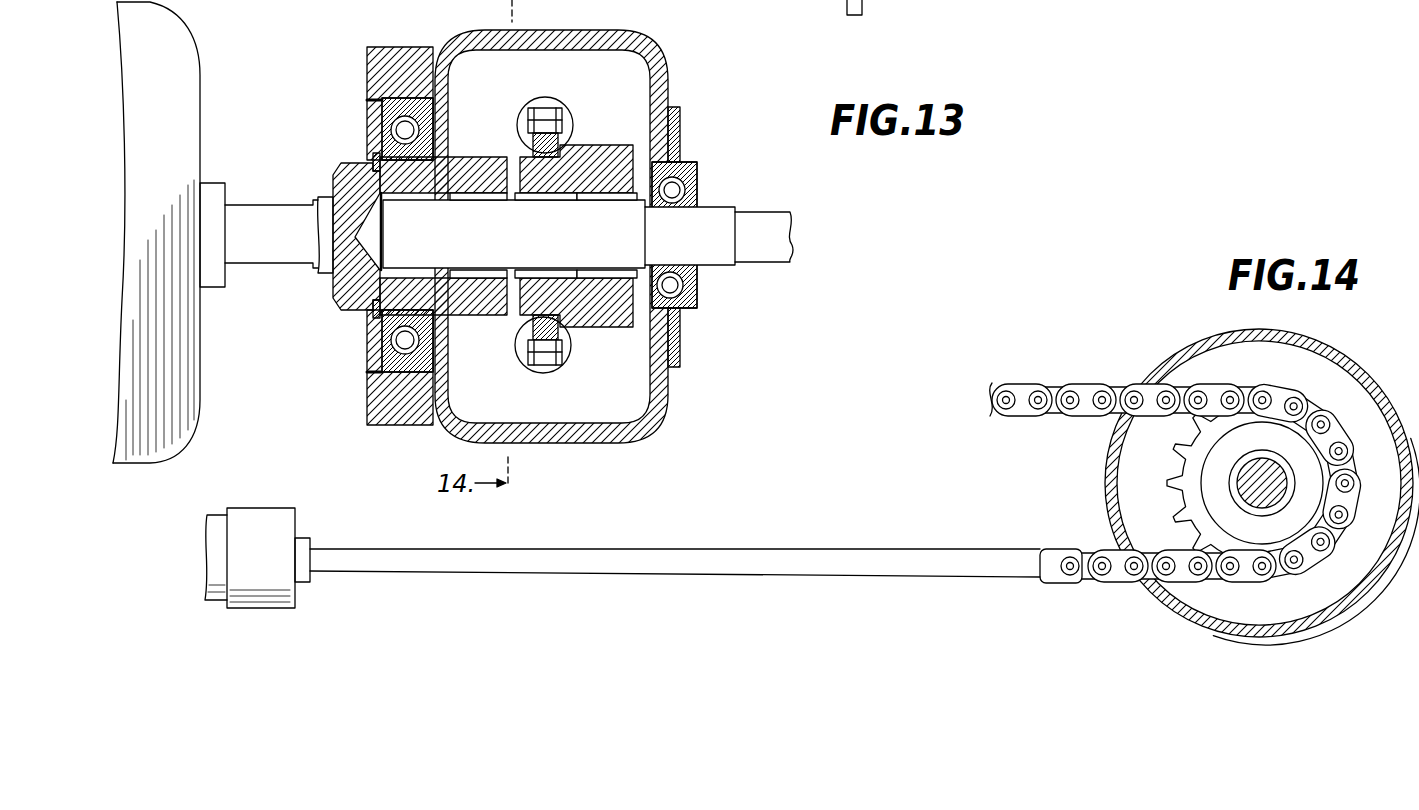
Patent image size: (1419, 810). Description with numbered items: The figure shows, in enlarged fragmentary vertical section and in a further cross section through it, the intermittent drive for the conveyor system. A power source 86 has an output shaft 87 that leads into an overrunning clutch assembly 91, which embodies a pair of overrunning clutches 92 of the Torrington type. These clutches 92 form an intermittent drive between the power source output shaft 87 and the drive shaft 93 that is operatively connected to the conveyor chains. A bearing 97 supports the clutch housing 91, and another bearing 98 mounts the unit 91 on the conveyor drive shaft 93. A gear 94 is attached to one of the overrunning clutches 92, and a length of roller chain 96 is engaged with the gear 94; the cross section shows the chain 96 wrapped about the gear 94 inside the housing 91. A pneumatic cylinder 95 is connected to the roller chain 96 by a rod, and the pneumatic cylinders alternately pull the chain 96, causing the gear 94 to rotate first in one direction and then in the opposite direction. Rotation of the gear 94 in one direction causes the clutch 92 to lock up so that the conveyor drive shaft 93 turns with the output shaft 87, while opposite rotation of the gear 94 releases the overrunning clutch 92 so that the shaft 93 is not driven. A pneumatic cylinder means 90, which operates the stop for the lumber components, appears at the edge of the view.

In FIG. 13, the power source 86 is at (183, 54).
In FIG. 13, the output shaft 87 is at (255, 250).
In FIG. 13, the pneumatic cylinder means 90 is at (866, 6).
In FIG. 13, the overrunning clutch assembly 91 is at (666, 62).
In FIG. 14, the overrunning clutch assembly 91 is at (1325, 345).
In FIG. 13, the overrunning clutch 92 is at (502, 165).
In FIG. 14, the overrunning clutch 92 is at (1306, 462).
In FIG. 13, the drive shaft 93 is at (724, 257).
In FIG. 14, the drive shaft 93 is at (1248, 478).
In FIG. 13, the gear 94 is at (548, 133).
In FIG. 14, the gear 94 is at (1178, 490).
In FIG. 14, the pneumatic cylinder 95 is at (207, 600).
In FIG. 13, the roller chain 96 is at (538, 114).
In FIG. 14, the roller chain 96 is at (1022, 385).
In FIG. 13, the bearing 97 is at (368, 392).
In FIG. 13, the bearing 98 is at (676, 186).